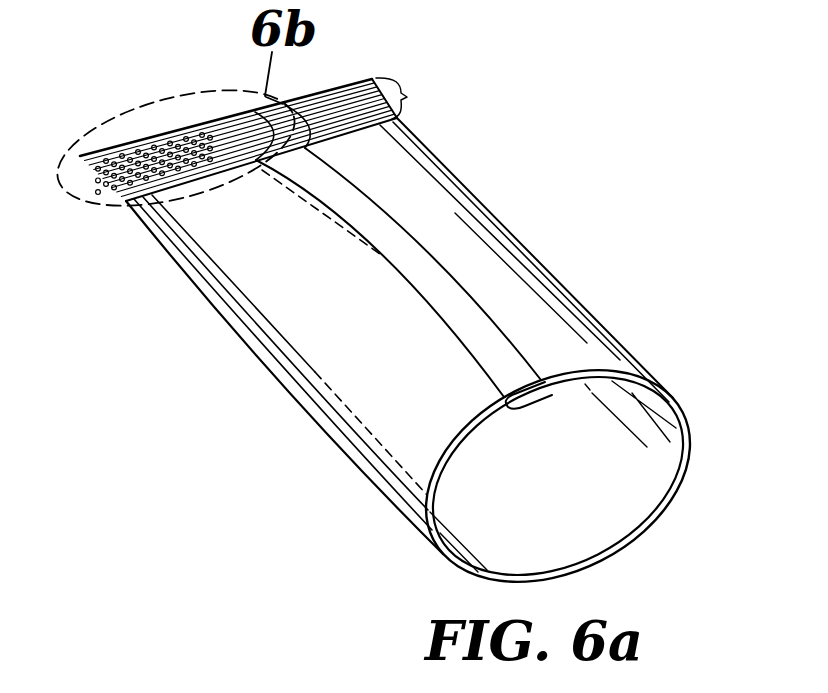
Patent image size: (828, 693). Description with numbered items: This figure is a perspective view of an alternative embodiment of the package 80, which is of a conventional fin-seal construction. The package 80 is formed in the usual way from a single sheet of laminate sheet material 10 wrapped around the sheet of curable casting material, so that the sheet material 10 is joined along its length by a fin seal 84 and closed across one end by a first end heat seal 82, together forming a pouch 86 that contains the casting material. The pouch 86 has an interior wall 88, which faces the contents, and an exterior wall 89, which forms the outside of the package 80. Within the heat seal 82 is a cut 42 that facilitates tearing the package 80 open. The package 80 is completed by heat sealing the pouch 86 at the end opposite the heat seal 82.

The laminate sheet material 10 is at (625, 322).
The cut 42 is at (147, 151).
The package 80 is at (563, 226).
The first end heat seal 82 is at (408, 95).
The fin seal 84 is at (430, 262).
The pouch 86 is at (626, 482).
The interior wall 88 is at (590, 536).
The exterior wall 89 is at (299, 328).